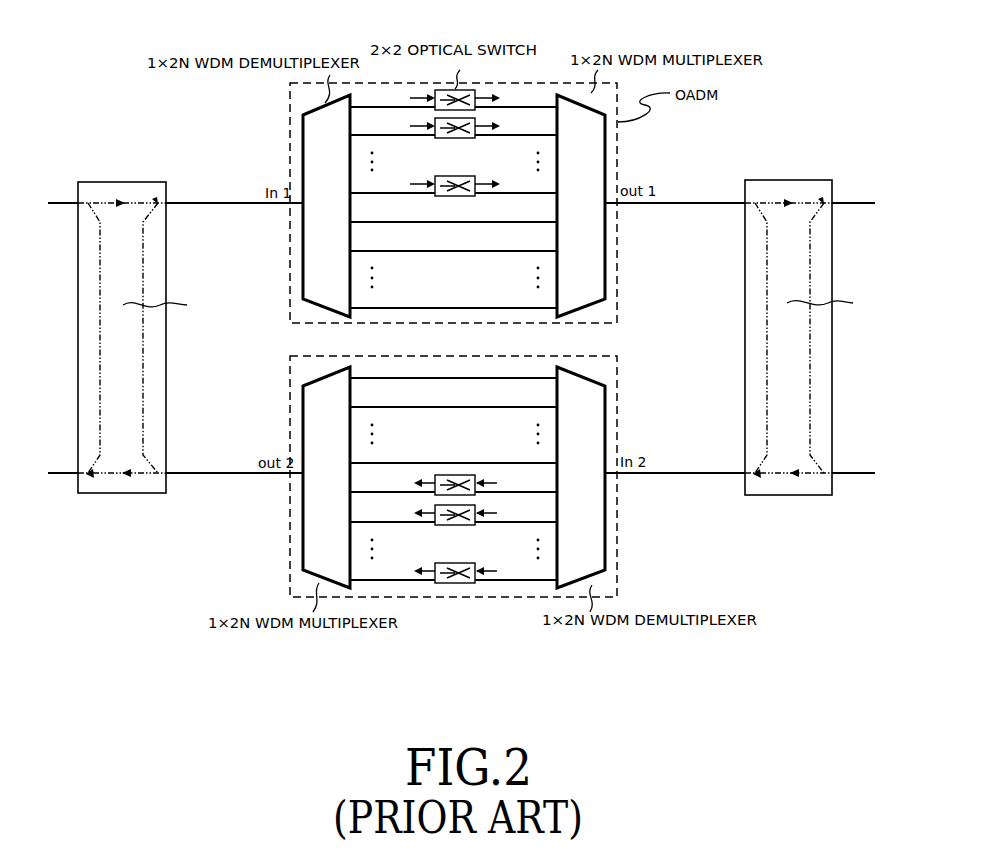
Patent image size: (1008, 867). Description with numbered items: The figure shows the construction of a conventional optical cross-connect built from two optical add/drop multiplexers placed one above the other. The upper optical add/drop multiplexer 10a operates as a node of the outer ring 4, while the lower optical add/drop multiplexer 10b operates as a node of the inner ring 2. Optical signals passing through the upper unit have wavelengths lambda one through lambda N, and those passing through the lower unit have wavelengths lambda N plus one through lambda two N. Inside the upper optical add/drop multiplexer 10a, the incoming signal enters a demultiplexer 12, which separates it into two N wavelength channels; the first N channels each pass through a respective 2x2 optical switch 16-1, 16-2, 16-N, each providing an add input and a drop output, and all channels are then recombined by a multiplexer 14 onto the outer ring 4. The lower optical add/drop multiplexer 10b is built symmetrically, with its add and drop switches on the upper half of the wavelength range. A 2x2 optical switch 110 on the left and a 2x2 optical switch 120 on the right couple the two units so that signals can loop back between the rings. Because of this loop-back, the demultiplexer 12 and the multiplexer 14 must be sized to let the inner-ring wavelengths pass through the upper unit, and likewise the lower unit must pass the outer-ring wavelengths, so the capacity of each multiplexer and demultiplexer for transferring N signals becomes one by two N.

The inner ring 2 is at (692, 473).
The outer ring 4 is at (668, 204).
The upper optical add/drop multiplexer 10a is at (617, 235).
The lower optical add/drop multiplexer 10b is at (617, 398).
The demultiplexer 12 is at (333, 319).
The multiplexer 14 is at (575, 319).
The 2x2 optical switch 16-1 is at (474, 92).
The 2x2 optical switch 16-2 is at (474, 139).
The 2x2 optical switch 16-N is at (474, 197).
The 2x2 optical switch 110 is at (123, 494).
The 2x2 optical switch 120 is at (785, 496).